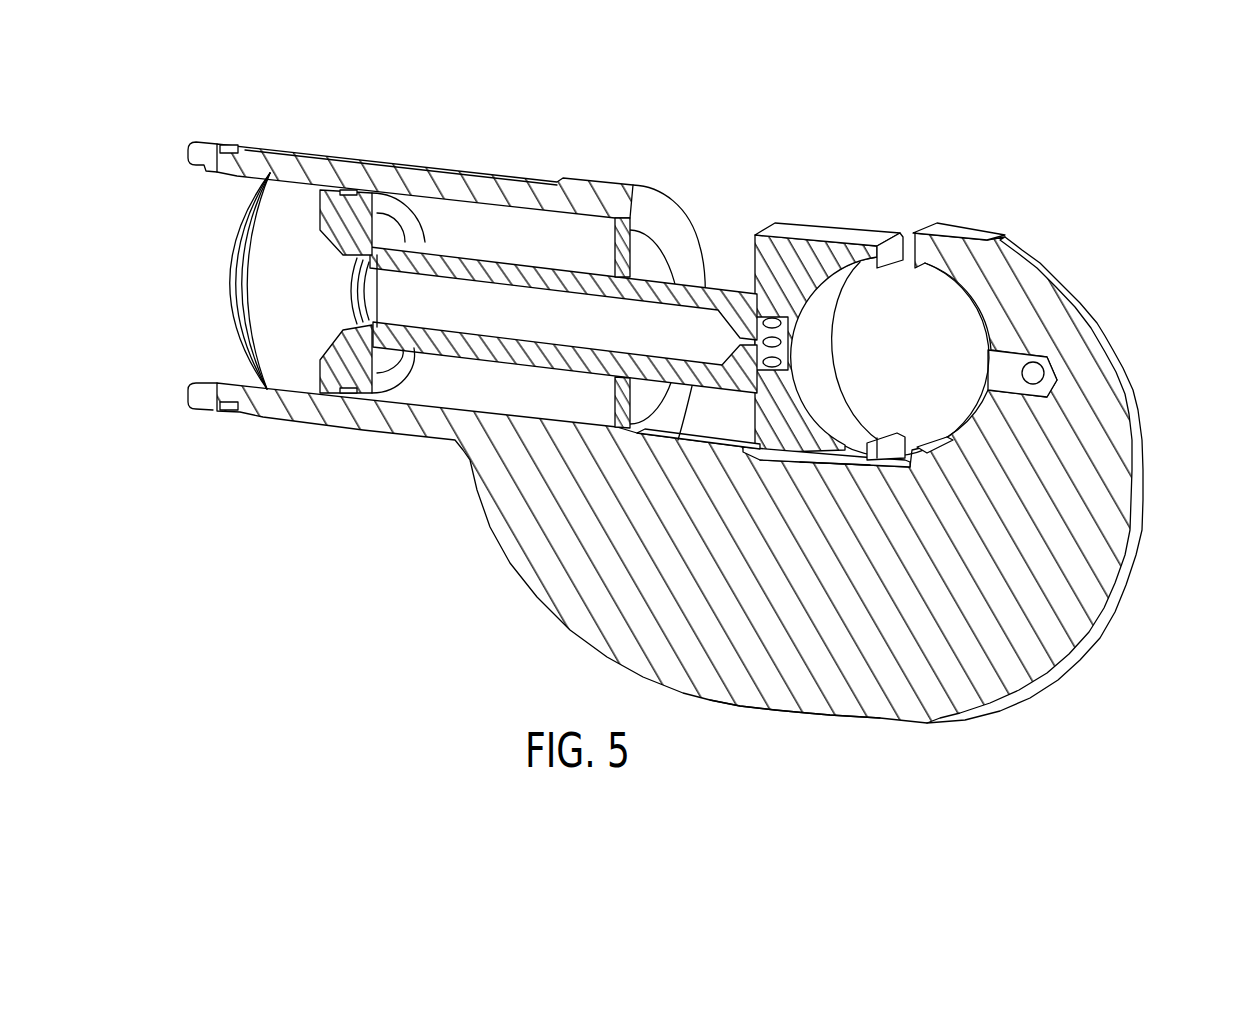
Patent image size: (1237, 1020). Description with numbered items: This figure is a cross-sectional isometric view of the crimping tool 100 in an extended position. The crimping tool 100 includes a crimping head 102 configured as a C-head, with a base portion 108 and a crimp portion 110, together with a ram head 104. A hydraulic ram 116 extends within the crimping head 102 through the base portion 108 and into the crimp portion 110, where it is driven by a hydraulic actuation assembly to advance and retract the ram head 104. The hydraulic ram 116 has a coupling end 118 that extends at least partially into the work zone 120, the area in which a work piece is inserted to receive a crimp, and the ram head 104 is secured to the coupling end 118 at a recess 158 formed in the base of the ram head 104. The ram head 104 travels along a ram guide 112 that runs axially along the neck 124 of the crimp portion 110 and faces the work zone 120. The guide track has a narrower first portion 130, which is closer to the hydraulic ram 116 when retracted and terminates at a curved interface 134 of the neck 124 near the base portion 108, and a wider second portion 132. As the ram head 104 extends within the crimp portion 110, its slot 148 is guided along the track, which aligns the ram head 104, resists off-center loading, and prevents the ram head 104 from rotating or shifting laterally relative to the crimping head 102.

The crimping tool 100 is at (702, 433).
The crimping head 102 is at (1137, 420).
The ram head 104 is at (808, 295).
The base portion 108 is at (458, 150).
The crimp portion 110 is at (716, 458).
The ram guide 112 is at (837, 460).
The hydraulic ram 116 is at (443, 360).
The coupling end 118 is at (774, 382).
The work zone 120 is at (920, 323).
The neck 124 is at (783, 707).
The first portion 130 is at (712, 447).
The second portion 132 is at (858, 462).
The curved interface 134 is at (633, 427).
The slot 148 is at (887, 450).
The recess 158 is at (777, 315).